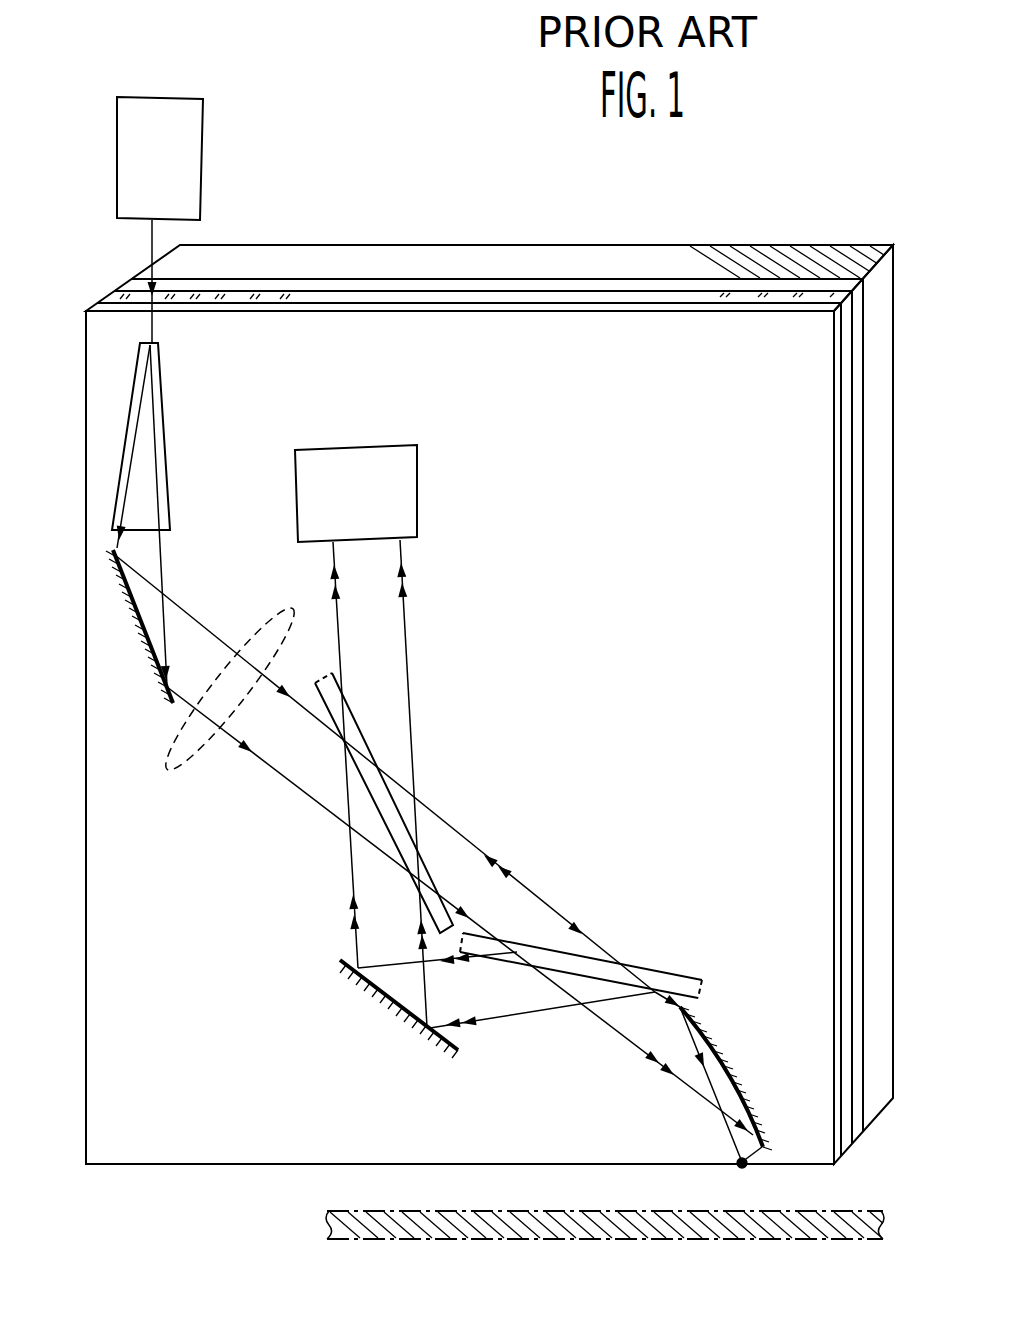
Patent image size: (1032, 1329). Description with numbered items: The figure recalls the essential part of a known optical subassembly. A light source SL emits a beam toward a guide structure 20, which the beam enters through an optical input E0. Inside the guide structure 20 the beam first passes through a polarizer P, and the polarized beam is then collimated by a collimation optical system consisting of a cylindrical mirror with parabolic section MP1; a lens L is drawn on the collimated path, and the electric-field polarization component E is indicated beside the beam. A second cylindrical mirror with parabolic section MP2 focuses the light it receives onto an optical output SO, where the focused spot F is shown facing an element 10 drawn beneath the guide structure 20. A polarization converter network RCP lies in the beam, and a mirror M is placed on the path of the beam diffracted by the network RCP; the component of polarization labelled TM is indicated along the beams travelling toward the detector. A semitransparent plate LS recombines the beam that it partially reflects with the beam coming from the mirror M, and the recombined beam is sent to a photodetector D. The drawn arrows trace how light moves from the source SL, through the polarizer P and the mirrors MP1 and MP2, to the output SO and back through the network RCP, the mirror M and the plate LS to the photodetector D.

The guide structure 20 is at (630, 234).
The light source SL is at (193, 148).
The optical input E0 is at (138, 296).
The polarizer P is at (147, 432).
The cylindrical mirror with parabolic section MP1 is at (133, 667).
The lens L is at (197, 750).
The electric field polarization (TE) E is at (162, 545).
The photodetector D is at (343, 460).
The magnetic field polarization TM is at (405, 577).
The semitransparent plate LS is at (385, 800).
The mirror M is at (392, 1018).
The polarization converter network RCP is at (667, 977).
The cylindrical mirror with parabolic section MP2 is at (758, 1068).
The optical output SO is at (748, 1166).
The focal point F is at (740, 1165).
The magneto-optical disk 10 is at (585, 1240).